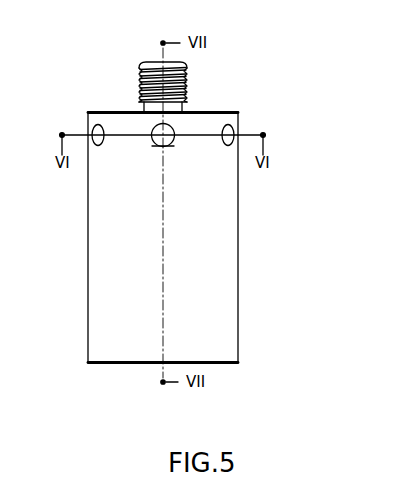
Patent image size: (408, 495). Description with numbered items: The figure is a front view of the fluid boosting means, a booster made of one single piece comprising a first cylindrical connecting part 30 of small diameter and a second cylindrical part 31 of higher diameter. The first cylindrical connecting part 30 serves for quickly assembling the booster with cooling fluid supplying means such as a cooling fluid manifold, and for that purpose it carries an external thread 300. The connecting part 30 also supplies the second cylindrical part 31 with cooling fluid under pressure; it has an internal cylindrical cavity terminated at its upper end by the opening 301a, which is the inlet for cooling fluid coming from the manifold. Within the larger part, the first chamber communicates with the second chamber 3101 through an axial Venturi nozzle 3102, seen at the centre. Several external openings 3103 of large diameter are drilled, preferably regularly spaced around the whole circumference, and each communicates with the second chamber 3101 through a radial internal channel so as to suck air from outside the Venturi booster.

The first cylindrical connecting part 30 is at (164, 62).
The external thread 300 is at (171, 57).
The opening 301a is at (133, 40).
The second cylindrical part 31 is at (191, 237).
The second chamber 3101 is at (137, 196).
The axial Venturi nozzle 3102 is at (170, 128).
The external openings 3103 is at (163, 182).